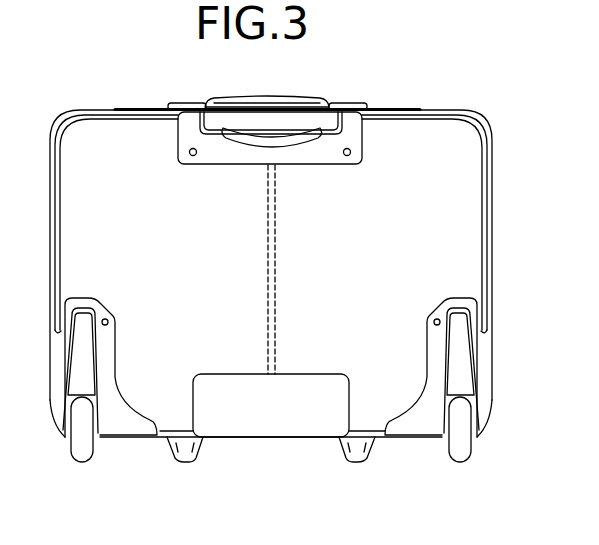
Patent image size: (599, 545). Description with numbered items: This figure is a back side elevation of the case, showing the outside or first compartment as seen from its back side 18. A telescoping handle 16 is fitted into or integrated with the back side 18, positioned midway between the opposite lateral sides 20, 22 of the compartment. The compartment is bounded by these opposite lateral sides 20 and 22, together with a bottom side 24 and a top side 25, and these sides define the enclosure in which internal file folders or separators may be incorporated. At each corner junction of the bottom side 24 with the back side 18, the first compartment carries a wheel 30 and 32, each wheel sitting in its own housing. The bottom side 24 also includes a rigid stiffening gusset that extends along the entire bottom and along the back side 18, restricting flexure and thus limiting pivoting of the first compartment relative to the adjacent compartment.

The telescoping handle 16 is at (313, 120).
The back side 18 is at (458, 212).
The lateral side 20 is at (50, 257).
The lateral side 22 is at (492, 253).
The bottom side 24 is at (250, 438).
The top side 25 is at (88, 108).
The wheel 30 is at (458, 462).
The wheel 32 is at (80, 455).